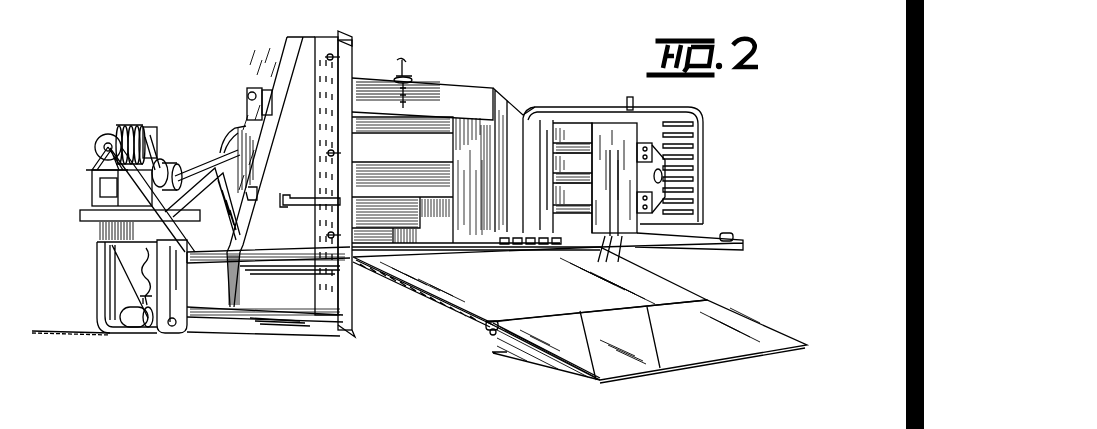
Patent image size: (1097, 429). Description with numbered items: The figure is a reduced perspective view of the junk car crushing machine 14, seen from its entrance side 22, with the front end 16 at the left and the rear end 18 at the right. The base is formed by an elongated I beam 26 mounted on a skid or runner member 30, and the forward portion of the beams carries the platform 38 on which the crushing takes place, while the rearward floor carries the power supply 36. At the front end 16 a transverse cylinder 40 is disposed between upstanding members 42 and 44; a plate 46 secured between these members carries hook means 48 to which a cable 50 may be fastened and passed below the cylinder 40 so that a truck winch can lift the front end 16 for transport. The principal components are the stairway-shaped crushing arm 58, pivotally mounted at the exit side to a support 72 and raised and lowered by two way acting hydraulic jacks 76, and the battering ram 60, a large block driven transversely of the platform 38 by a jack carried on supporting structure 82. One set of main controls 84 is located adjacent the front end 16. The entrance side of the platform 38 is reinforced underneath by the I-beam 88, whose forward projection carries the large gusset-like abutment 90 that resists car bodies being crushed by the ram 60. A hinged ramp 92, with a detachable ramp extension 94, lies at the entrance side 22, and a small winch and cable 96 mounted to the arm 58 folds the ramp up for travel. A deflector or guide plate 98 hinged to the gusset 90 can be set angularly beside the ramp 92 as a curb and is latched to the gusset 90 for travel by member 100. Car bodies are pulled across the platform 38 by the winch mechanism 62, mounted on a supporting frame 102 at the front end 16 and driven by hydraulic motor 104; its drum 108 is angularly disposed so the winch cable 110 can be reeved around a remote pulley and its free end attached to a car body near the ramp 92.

The machine 14 is at (646, 131).
The front end 16 is at (38, 184).
The rear end 18 is at (718, 180).
The entrance side 22 is at (414, 250).
The I beam 26 is at (210, 300).
The skid or runner member 30 is at (205, 335).
The power supply 36 is at (594, 105).
The platform 38 is at (440, 250).
The cylinder 40 is at (147, 327).
The upstanding member 42 is at (97, 285).
The upstanding member 44 is at (175, 335).
The plate 46 is at (123, 248).
The hook means 48 is at (143, 262).
The cable 50 is at (35, 334).
The crushing arm 58 is at (442, 88).
The battering ram 60 is at (502, 100).
The winch mechanism 62 is at (113, 110).
The support 72 is at (448, 212).
The two way acting hydraulic jack 76 is at (247, 130).
The supporting structure 82 is at (645, 135).
The main controls 84 is at (100, 224).
The I-beam 88 is at (283, 307).
The gusset-like plates or abutment 90 is at (298, 67).
The hinged ramp 92 is at (675, 290).
The ramp extension 94 is at (728, 320).
The winch and cable 96 is at (402, 60).
The deflector or guide plate 98 is at (352, 38).
The latching member 100 is at (260, 190).
The supporting frame 102 is at (92, 192).
The motor 104 is at (180, 165).
The drum 108 is at (103, 132).
The winch cable 110 is at (128, 125).